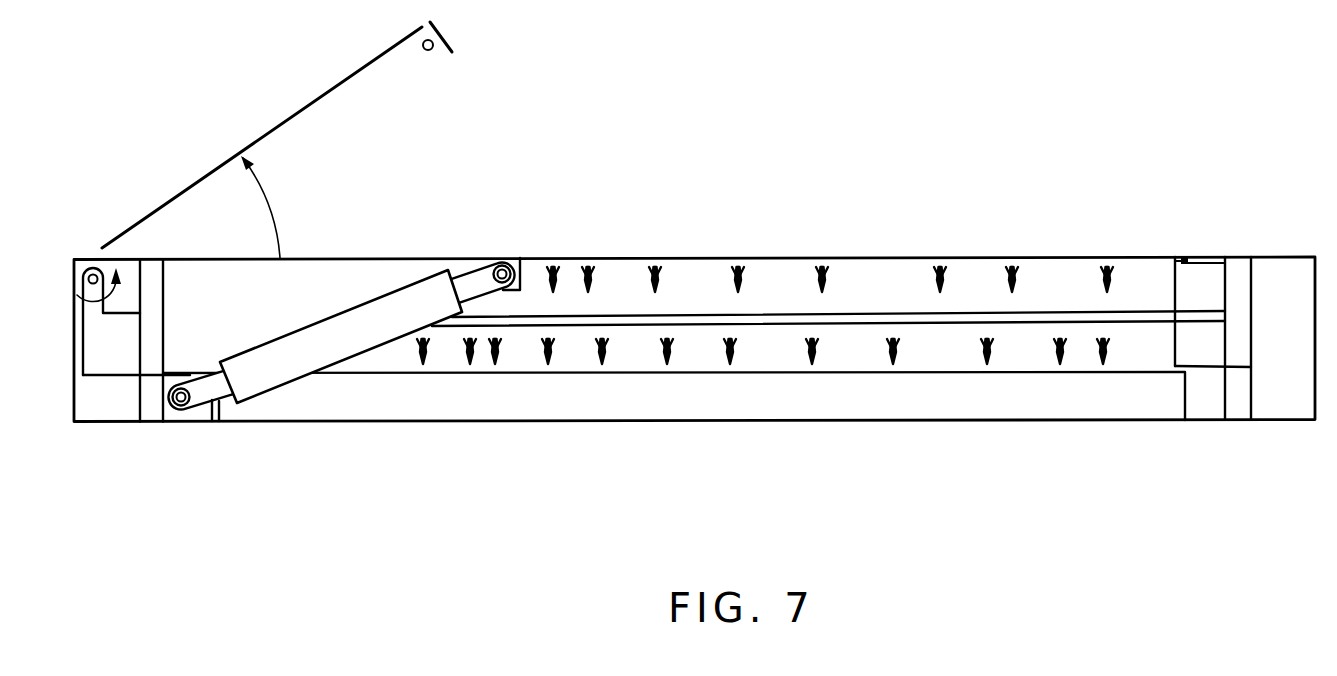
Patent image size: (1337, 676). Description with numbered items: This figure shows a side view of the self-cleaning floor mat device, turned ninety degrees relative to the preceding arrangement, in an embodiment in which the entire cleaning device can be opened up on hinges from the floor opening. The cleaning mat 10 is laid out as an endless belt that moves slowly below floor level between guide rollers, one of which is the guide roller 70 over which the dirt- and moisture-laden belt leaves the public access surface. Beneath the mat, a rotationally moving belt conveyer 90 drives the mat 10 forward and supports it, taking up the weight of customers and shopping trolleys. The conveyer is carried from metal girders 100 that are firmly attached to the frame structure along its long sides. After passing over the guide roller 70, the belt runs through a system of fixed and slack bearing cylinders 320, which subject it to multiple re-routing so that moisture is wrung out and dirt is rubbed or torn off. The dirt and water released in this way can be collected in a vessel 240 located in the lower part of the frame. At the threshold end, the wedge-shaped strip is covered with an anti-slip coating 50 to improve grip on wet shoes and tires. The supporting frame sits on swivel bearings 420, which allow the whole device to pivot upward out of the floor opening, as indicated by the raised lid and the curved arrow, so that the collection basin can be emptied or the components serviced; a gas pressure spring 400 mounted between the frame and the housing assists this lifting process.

The cleaning mat 10 is at (770, 297).
The belt conveyer 90 is at (837, 335).
The bearing cylinders 320 is at (1005, 317).
The vessel 240 is at (972, 410).
The guide roller 70 is at (1183, 286).
The anti-slip coating 50 is at (1203, 255).
The metal girder 100 is at (150, 347).
The swivel bearings 420 is at (88, 261).
The gas pressure springs 400 is at (288, 372).